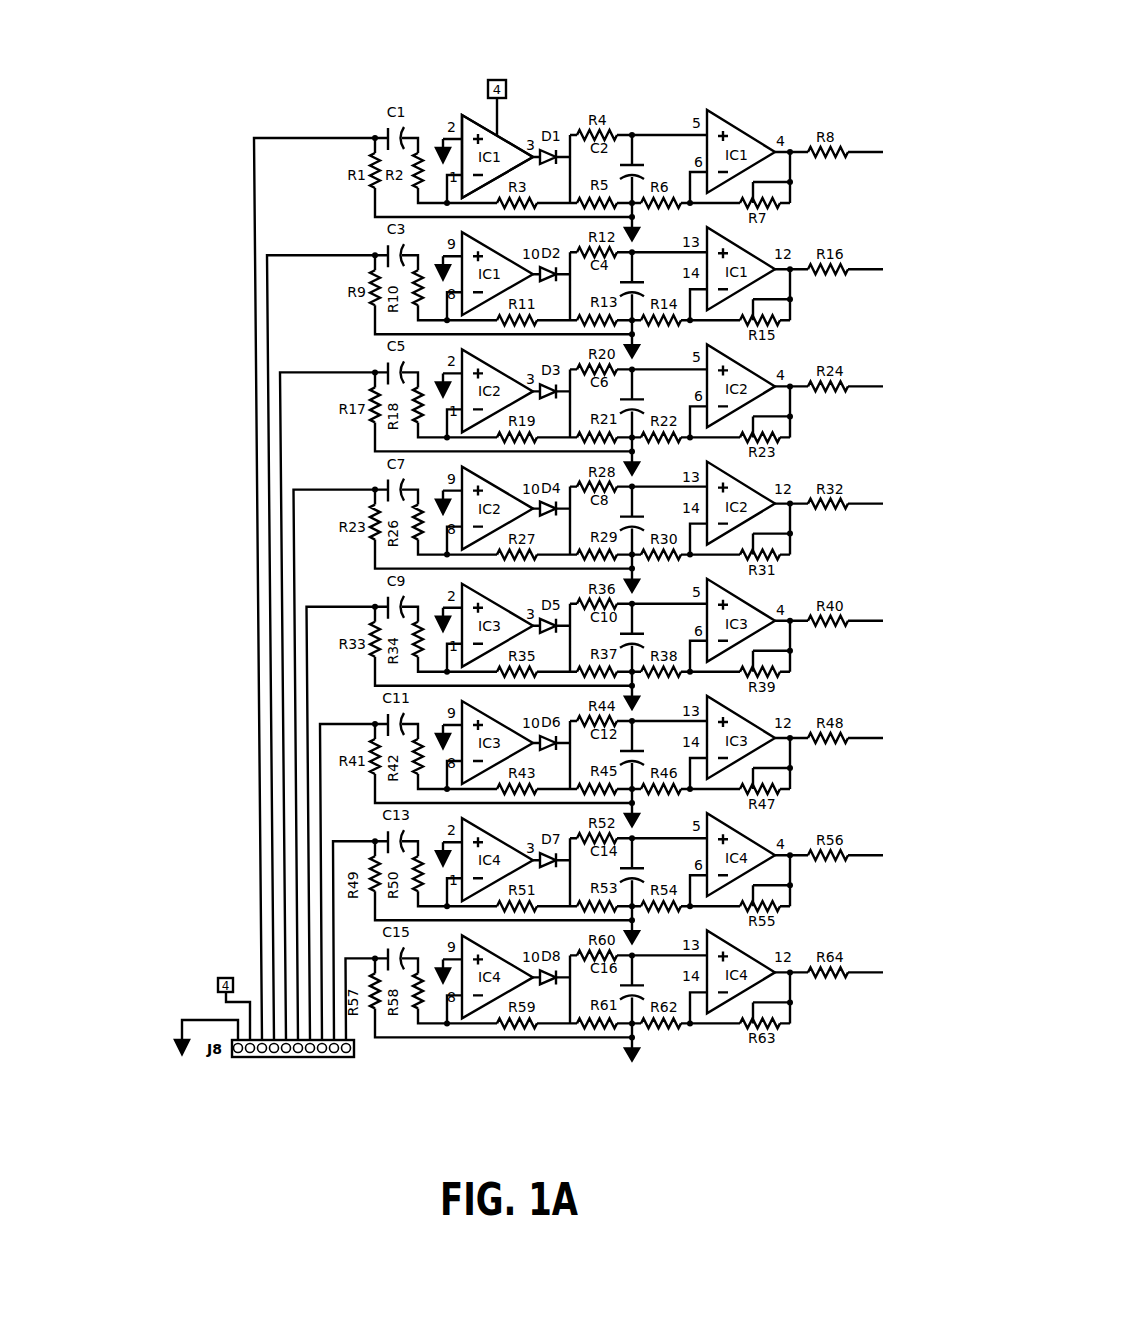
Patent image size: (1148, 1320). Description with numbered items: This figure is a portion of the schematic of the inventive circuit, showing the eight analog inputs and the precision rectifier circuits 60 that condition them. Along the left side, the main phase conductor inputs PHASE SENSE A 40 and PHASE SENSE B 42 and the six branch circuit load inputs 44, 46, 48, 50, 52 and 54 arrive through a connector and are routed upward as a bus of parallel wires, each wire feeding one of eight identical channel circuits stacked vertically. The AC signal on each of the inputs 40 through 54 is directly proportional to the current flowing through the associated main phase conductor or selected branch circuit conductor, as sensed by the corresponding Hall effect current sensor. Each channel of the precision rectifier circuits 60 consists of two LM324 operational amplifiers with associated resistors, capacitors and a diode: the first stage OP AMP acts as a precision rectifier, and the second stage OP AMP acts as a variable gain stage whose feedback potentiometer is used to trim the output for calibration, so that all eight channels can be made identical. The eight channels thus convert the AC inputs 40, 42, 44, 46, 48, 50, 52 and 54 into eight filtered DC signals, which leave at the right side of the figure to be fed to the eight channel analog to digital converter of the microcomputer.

The PHASE SENSE A input 40 is at (152, 129).
The PHASE SENSE B input 42 is at (157, 246).
The LOAD 1 input 44 is at (164, 362).
The LOAD 2 input 46 is at (166, 484).
The LOAD 3 input 48 is at (166, 597).
The LOAD 4 input 50 is at (166, 716).
The LOAD 5 input 52 is at (173, 832).
The LOAD 6 input 54 is at (175, 950).
The precision rectifier circuits 60 is at (462, 114).